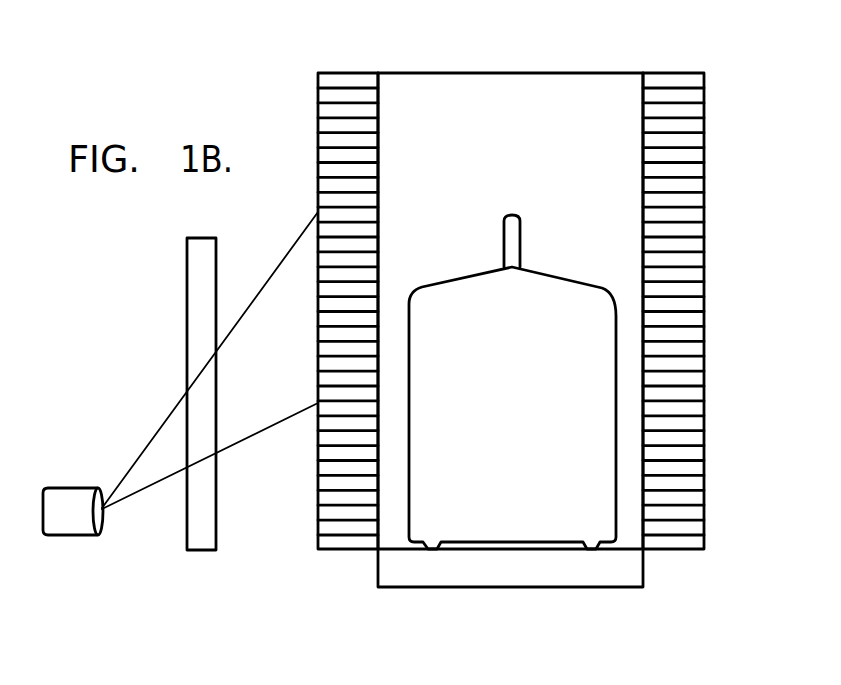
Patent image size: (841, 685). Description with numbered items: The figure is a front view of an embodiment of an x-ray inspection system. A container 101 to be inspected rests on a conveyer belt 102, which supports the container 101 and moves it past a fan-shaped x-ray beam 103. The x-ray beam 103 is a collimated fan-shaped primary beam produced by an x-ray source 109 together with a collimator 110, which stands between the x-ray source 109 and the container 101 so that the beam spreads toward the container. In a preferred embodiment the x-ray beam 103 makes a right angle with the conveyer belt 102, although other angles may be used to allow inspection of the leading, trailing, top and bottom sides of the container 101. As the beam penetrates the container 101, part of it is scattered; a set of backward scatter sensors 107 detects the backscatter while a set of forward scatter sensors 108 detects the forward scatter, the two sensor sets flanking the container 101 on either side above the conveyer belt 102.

The container 101 is at (563, 276).
The conveyer belt 102 is at (548, 587).
The x-ray beam 103 is at (146, 447).
The backward scatter sensors 107 is at (342, 73).
The forward scatter sensors 108 is at (676, 73).
The x-ray source 109 is at (71, 535).
The collimator 110 is at (198, 550).